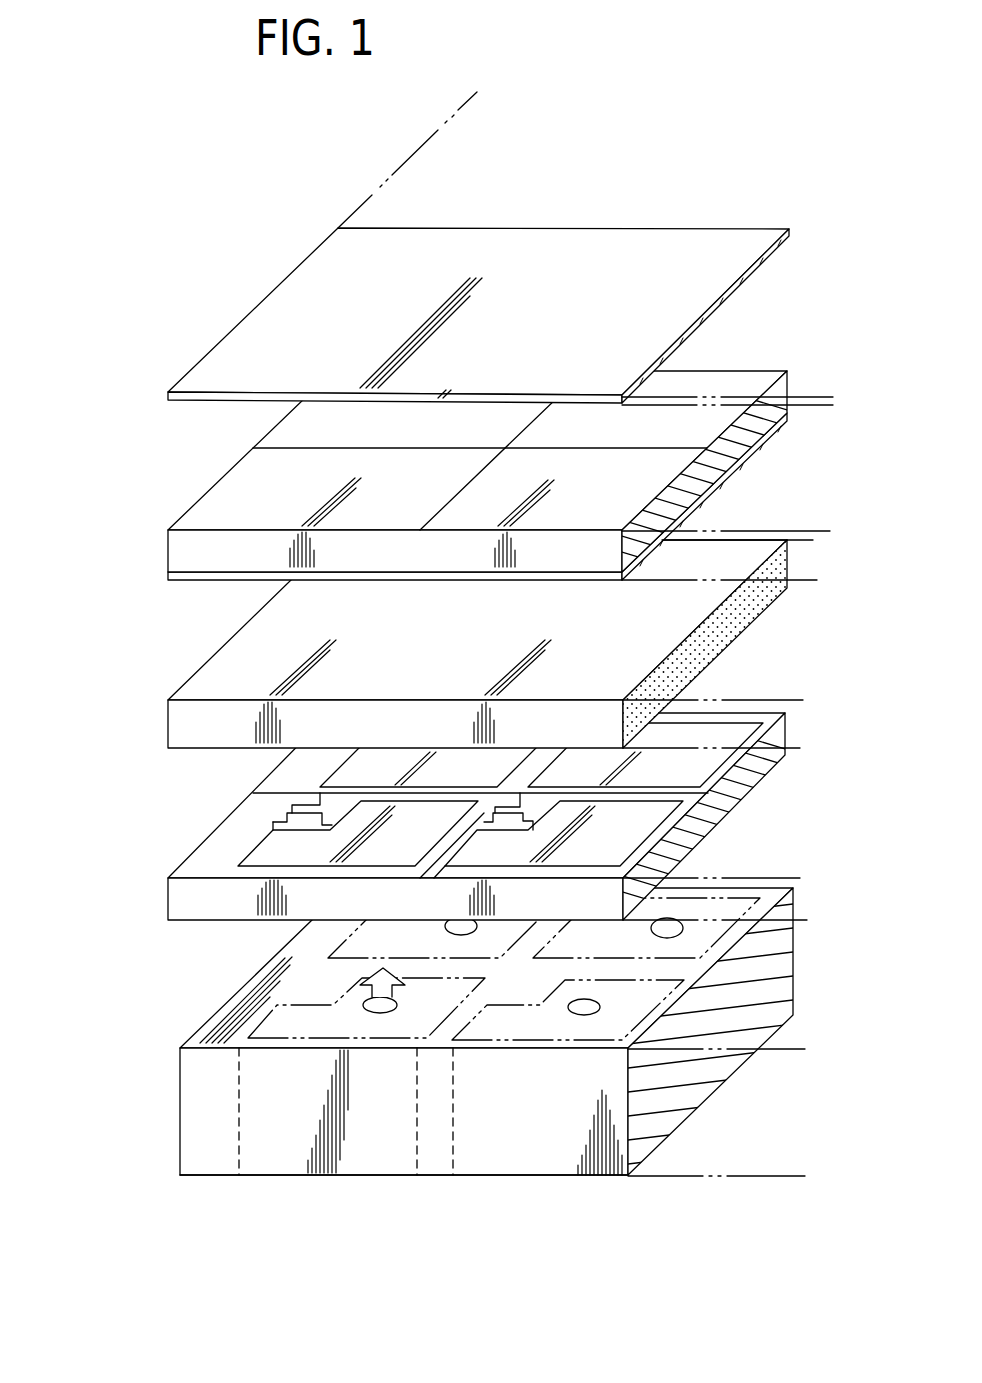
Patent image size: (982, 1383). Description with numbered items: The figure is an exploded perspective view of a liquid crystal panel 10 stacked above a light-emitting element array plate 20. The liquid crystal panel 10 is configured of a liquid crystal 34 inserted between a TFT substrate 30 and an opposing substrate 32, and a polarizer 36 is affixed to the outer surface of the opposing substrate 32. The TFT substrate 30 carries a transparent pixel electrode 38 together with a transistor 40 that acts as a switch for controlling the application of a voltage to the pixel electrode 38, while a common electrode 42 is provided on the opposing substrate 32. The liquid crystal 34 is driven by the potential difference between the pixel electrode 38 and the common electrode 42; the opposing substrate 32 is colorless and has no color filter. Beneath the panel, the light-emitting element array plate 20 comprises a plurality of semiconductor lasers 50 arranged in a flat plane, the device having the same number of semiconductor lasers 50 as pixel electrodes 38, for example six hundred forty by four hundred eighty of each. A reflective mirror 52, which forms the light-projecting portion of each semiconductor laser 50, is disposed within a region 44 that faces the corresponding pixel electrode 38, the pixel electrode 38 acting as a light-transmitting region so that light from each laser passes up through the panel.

The liquid crystal panel 10 is at (442, 540).
The light-emitting element array plate 20 is at (183, 1110).
The TFT substrate 30 is at (263, 777).
The opposing substrate 32 is at (225, 465).
The liquid crystal 34 is at (219, 644).
The polarizer 36 is at (478, 247).
The pixel electrode 38 is at (297, 850).
The transistor 40 is at (292, 791).
The common electrode 42 is at (168, 568).
The region 44 is at (300, 1027).
The semiconductor laser 50 is at (372, 1167).
The reflective mirror 52 is at (373, 1013).